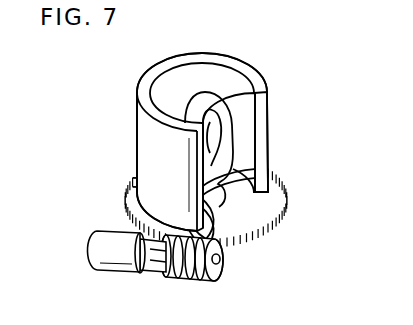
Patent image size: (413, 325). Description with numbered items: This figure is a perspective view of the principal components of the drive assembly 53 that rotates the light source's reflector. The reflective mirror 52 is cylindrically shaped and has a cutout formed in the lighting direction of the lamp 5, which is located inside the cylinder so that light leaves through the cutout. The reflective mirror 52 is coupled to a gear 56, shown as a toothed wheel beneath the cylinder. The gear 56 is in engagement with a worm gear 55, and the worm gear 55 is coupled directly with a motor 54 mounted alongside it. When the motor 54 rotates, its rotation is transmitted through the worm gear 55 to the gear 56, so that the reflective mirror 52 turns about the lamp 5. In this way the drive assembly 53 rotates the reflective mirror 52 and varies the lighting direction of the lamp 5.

The lamp 5 is at (228, 128).
The reflective mirror 52 is at (227, 142).
The drive assembly 53 is at (134, 239).
The motor 54 is at (107, 268).
The worm gear 55 is at (198, 279).
The gear 56 is at (258, 205).